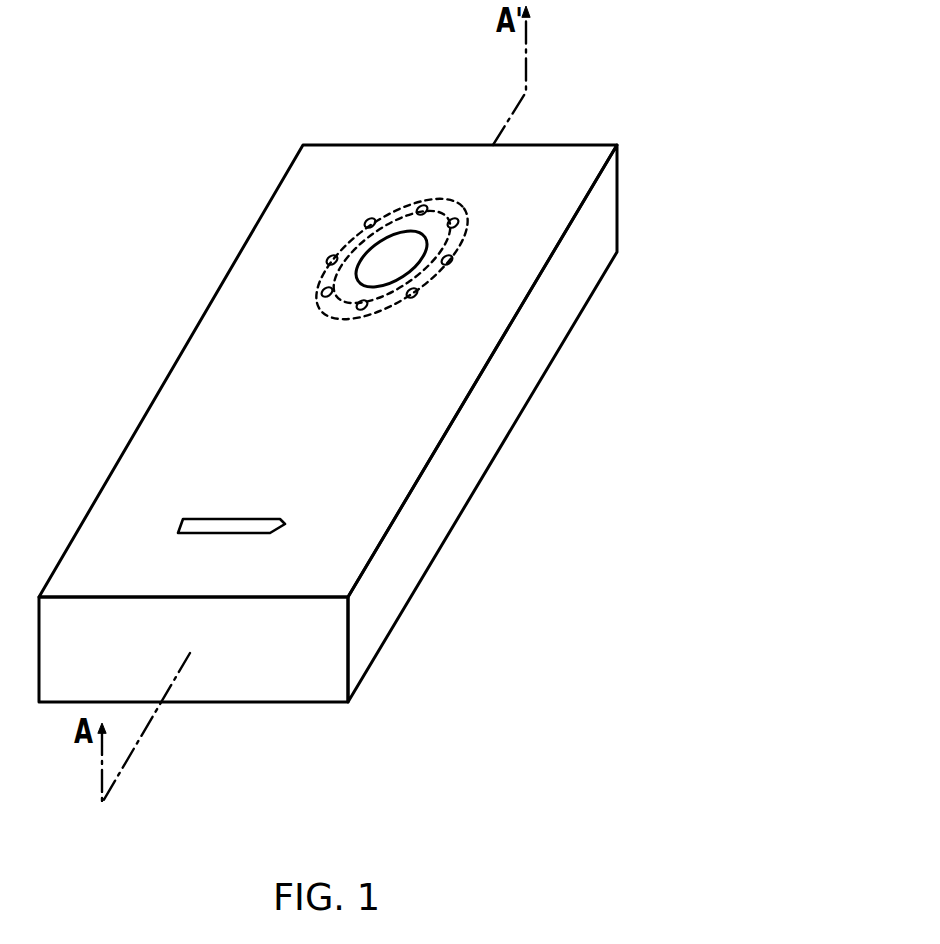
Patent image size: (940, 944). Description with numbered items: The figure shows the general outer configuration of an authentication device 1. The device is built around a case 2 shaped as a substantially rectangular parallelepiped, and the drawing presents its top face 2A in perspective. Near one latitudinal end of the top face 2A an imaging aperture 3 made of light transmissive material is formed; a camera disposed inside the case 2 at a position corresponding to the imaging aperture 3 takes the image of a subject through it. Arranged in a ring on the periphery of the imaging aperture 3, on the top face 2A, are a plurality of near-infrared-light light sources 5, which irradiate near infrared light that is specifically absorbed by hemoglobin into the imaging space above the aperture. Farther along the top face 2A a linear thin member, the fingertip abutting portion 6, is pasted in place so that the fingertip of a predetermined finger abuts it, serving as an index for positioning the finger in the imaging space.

The authentication device 1 is at (711, 105).
The case 2 is at (605, 223).
The top face 2A is at (158, 418).
The imaging aperture 3 is at (360, 257).
The near-infrared-light light source 5 is at (437, 283).
The fingertip abutting portion 6 is at (270, 533).